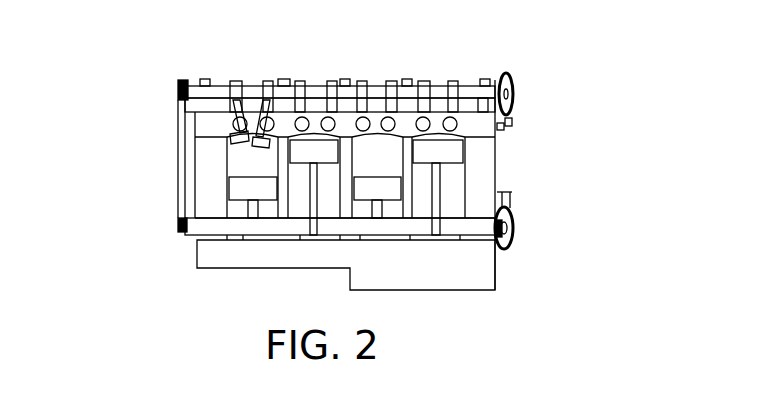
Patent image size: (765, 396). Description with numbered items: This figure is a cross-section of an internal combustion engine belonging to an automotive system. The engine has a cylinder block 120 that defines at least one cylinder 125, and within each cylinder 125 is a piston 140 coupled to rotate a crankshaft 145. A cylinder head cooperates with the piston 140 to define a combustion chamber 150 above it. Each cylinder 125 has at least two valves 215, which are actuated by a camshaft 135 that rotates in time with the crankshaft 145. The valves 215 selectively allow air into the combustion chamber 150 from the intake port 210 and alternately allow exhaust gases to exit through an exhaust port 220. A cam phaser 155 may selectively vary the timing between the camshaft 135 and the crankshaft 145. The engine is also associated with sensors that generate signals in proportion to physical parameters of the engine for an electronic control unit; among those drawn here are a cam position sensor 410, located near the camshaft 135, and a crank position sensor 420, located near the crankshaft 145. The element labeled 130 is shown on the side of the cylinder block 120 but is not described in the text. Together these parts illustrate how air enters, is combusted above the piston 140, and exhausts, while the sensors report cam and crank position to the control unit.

The cam phaser 155 is at (182, 92).
The camshaft 135 is at (250, 85).
The exhaust port 220 is at (325, 117).
The intake port 210 is at (366, 117).
The cylinder 125 is at (352, 163).
The valves 215 is at (258, 142).
The side plate 130 is at (196, 132).
The cylinder block 120 is at (197, 178).
The crankshaft 145 is at (223, 230).
The piston 140 is at (378, 188).
The combustion chamber 150 is at (440, 140).
The cam position sensor 410 is at (513, 128).
The crank position sensor 420 is at (512, 192).